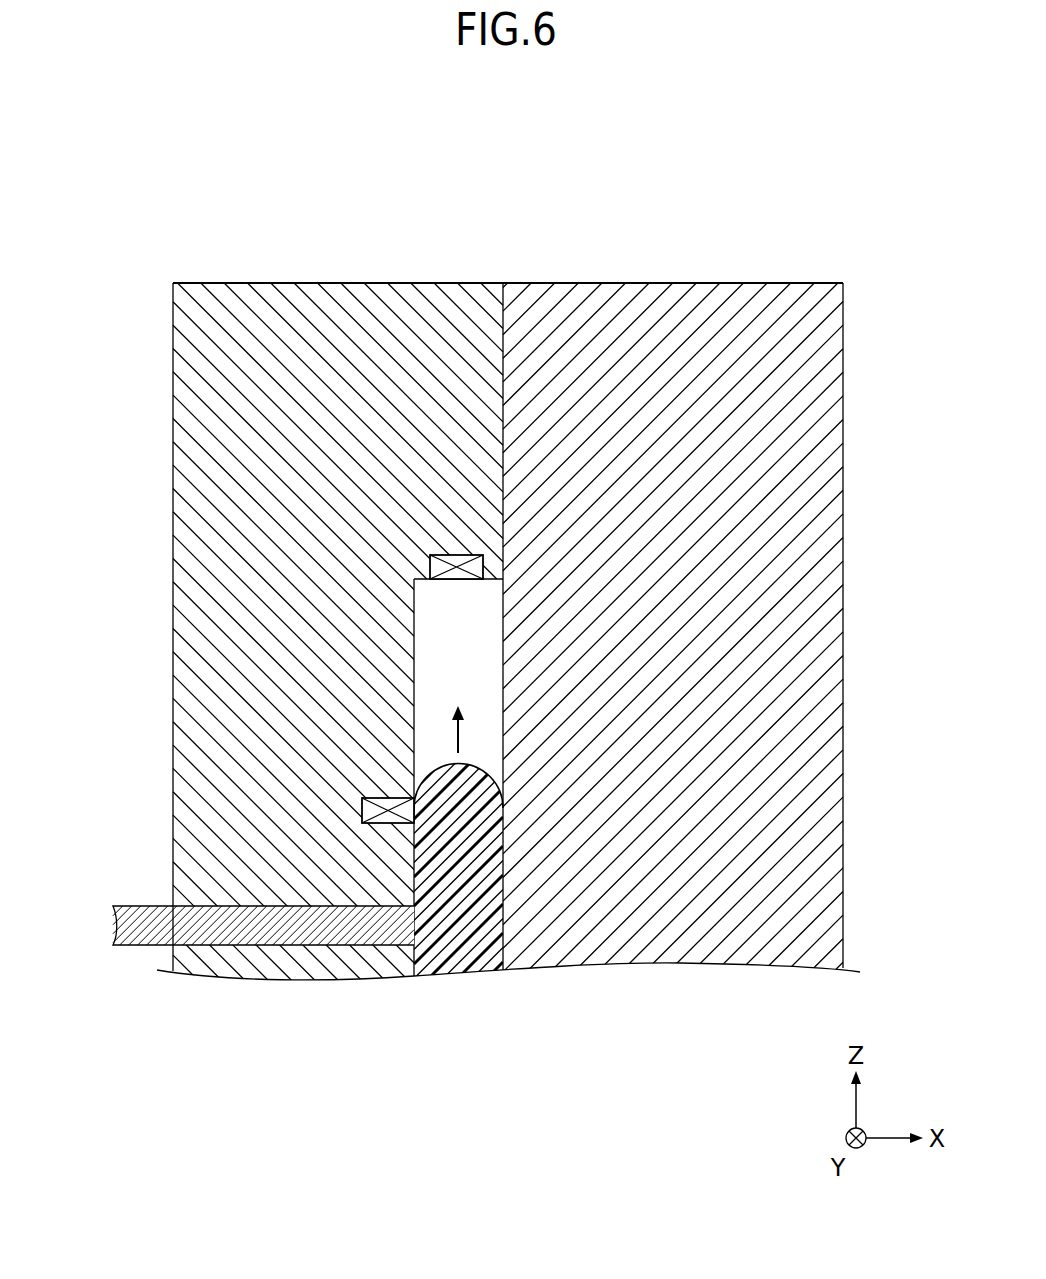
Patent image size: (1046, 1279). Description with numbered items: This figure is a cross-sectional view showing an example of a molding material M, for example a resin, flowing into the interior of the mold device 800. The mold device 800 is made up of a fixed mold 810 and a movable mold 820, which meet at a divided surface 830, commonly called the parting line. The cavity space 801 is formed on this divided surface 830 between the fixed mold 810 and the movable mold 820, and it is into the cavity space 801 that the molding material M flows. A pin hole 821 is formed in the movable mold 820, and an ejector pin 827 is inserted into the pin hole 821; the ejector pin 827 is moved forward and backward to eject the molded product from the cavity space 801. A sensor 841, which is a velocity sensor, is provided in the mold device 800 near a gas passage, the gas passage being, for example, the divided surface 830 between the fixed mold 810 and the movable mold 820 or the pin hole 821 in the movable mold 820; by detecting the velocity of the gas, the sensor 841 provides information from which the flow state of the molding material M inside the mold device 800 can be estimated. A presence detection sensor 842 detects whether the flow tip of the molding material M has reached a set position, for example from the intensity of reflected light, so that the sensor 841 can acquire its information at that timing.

The mold device 800 is at (173, 177).
The movable mold 820 is at (335, 318).
The divided surface 830 is at (505, 321).
The fixed mold 810 is at (680, 318).
The sensor 841 is at (447, 572).
The cavity space 801 is at (447, 618).
The presence detection sensor 842 is at (385, 816).
The ejector pin 827 is at (258, 925).
The pin hole 821 is at (346, 945).
The molding material M is at (458, 940).